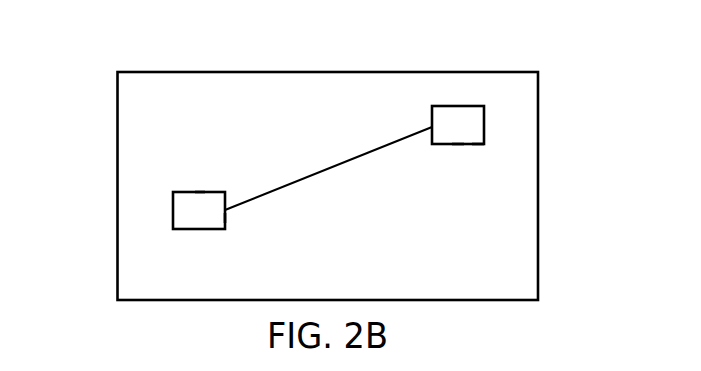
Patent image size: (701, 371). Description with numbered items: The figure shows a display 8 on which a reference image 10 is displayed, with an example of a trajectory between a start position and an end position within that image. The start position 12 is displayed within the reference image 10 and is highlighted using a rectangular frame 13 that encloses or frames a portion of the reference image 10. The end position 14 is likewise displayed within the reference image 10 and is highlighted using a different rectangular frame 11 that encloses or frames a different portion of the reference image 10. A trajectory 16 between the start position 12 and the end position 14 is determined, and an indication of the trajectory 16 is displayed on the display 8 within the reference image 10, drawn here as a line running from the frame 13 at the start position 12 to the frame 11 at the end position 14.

The display 8 is at (538, 118).
The reference image 10 is at (132, 130).
The rectangular frame 11 is at (478, 144).
The start position 12 is at (200, 190).
The rectangular frame 13 is at (225, 218).
The end position 14 is at (458, 144).
The trajectory 16 is at (330, 165).